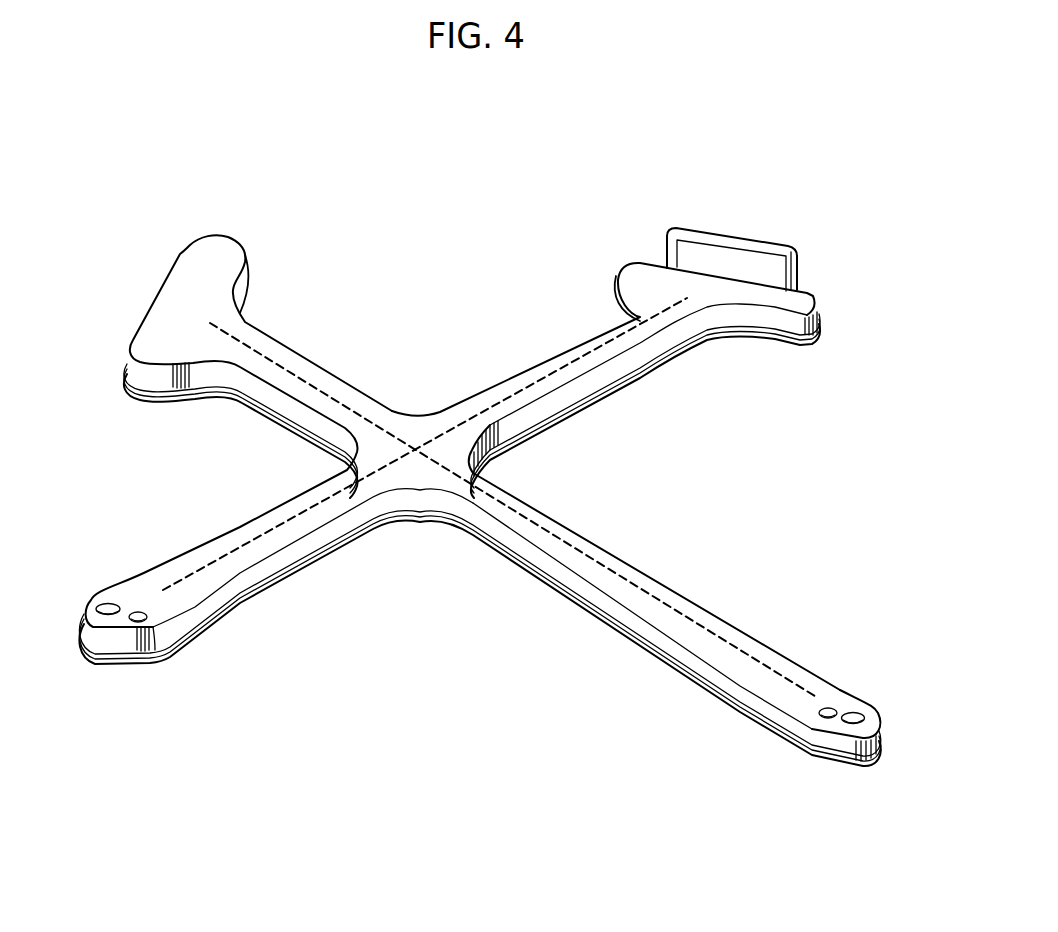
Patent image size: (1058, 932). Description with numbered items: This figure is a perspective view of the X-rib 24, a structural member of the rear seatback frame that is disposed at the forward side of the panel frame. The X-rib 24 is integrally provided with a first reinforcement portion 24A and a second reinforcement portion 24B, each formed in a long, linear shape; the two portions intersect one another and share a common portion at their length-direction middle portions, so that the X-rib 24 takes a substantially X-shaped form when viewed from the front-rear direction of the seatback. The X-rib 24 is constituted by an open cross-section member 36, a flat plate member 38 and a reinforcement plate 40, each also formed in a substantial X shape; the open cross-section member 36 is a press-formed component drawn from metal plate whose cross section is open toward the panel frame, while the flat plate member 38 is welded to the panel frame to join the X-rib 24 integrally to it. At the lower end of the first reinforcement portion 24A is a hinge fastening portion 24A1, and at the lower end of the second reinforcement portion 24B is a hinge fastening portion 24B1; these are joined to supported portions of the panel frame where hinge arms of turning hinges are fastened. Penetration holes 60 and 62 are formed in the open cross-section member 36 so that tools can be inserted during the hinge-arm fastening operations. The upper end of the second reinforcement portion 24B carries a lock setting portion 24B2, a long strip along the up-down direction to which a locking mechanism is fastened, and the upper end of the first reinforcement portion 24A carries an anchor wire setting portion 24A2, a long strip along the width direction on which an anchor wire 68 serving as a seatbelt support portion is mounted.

The X-rib 24 is at (426, 205).
The first reinforcement portion 24A is at (520, 367).
The second reinforcement portion 24B is at (660, 567).
The hinge fastening portion 24A1 is at (126, 591).
The anchor wire setting portion 24A2 is at (812, 297).
The hinge fastening portion 24B1 is at (846, 700).
The lock setting portion 24B2 is at (178, 292).
The open cross-section member 36 is at (757, 640).
The flat plate member 38 is at (235, 617).
The reinforcement plate 40 is at (550, 530).
The penetration hole 60 is at (108, 610).
The penetration hole 62 is at (858, 722).
The anchor wire 68 is at (745, 235).